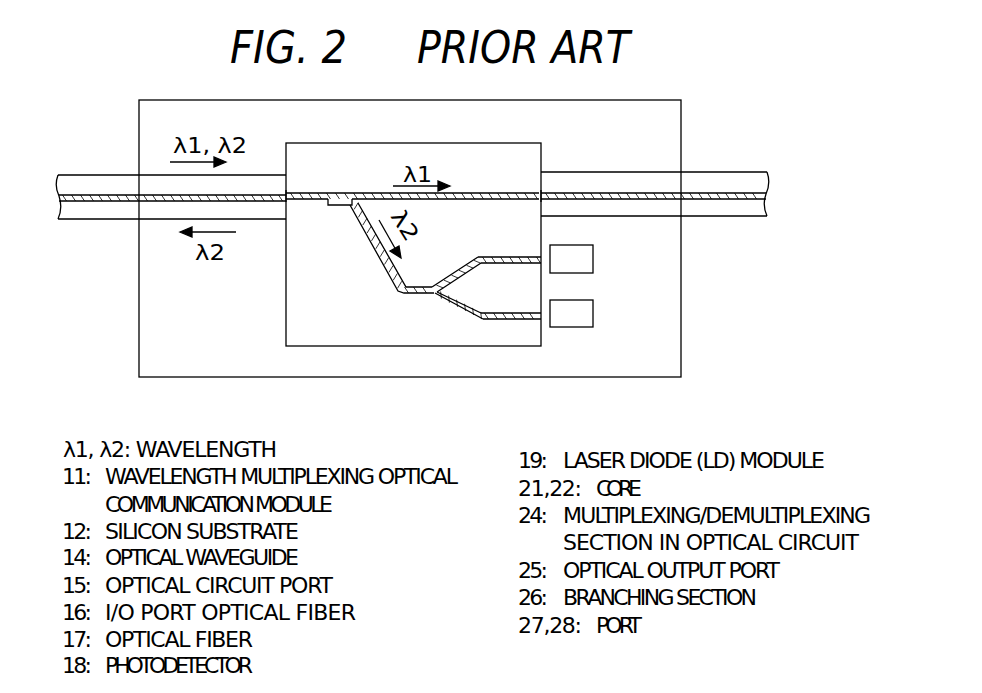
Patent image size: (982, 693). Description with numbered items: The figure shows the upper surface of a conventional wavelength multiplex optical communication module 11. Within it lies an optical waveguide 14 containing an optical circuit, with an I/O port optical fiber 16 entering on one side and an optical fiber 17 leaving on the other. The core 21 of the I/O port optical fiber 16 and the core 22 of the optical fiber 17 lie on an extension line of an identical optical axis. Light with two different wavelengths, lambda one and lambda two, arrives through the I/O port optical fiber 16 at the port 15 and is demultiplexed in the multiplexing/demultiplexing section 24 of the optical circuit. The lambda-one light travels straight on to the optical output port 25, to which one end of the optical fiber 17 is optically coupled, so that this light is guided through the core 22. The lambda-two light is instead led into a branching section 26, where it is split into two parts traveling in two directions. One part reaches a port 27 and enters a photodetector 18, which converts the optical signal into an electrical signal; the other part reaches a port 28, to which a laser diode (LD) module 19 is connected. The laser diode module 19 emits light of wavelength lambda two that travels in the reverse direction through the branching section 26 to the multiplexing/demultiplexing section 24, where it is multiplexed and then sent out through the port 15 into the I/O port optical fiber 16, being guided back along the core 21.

The wavelength multiplex optical communication module 11 is at (720, 99).
The optical waveguide 14 is at (476, 143).
The port 15 is at (287, 194).
The I/O port optical fiber 16 is at (120, 174).
The optical fiber 17 is at (702, 172).
The photodetector 18 is at (594, 258).
The laser diode (LD) module 19 is at (594, 312).
The core 21 is at (118, 203).
The core 22 is at (703, 200).
The multiplexing/demultiplexing section 24 is at (346, 195).
The optical output port 25 is at (540, 195).
The branching section 26 is at (451, 302).
The port 27 is at (542, 263).
The port 28 is at (542, 319).